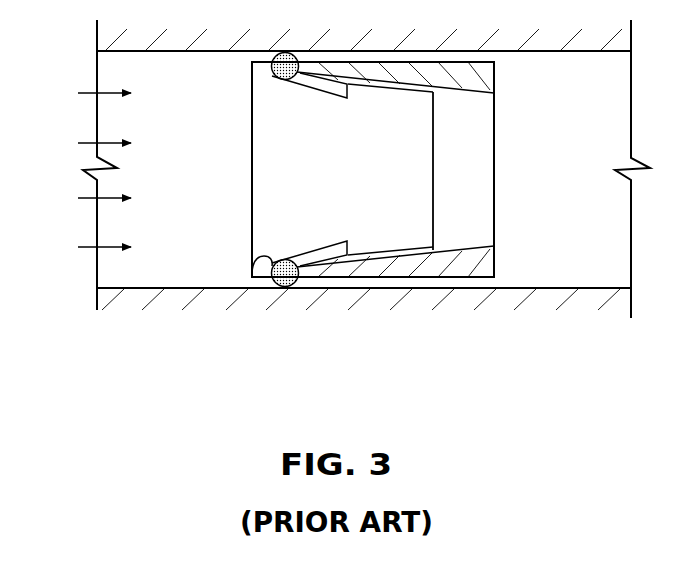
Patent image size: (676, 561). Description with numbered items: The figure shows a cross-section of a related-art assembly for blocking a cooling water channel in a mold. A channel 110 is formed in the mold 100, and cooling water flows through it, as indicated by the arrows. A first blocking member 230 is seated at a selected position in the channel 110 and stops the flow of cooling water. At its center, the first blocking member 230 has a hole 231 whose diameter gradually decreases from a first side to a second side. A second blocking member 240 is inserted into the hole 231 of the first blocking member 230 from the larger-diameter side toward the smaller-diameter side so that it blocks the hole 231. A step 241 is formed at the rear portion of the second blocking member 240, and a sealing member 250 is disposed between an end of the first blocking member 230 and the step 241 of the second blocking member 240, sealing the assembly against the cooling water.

The mold 100 is at (145, 303).
The channel 110 is at (230, 186).
The second blocking member 240 is at (378, 186).
The step 241 is at (270, 256).
The sealing member 250 is at (290, 288).
The first blocking member 230 is at (433, 267).
The hole 231 is at (463, 213).